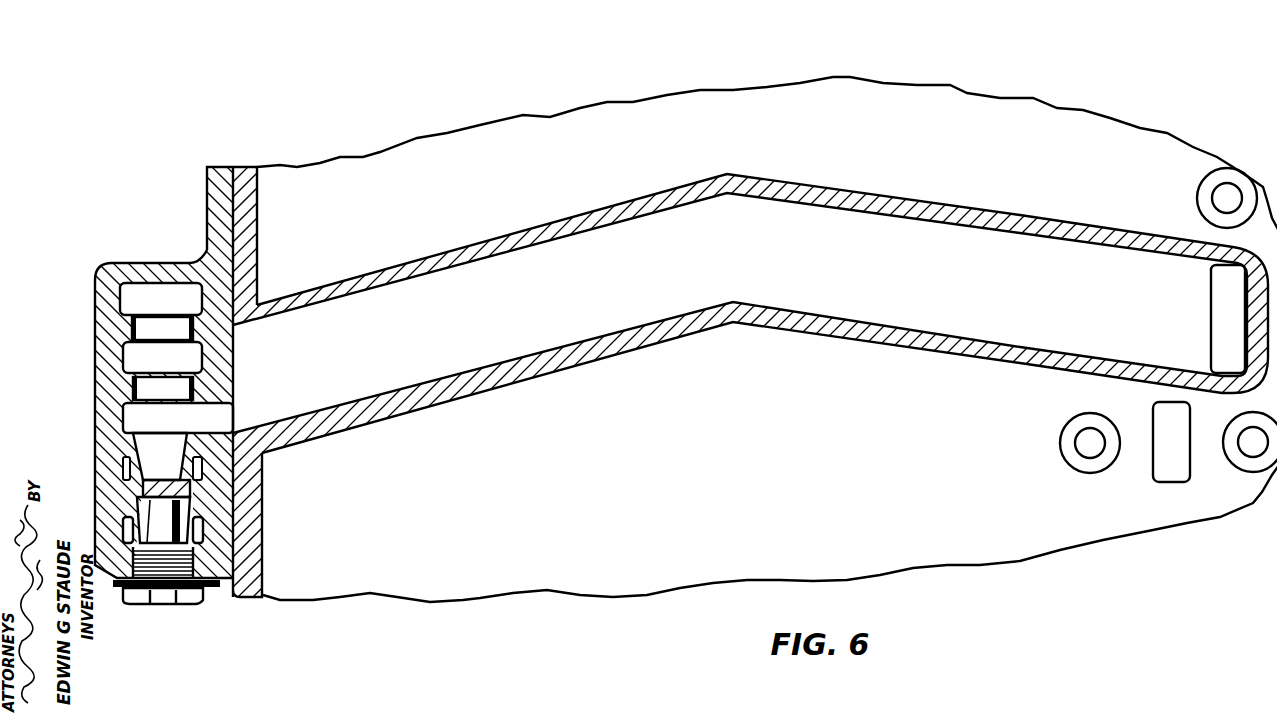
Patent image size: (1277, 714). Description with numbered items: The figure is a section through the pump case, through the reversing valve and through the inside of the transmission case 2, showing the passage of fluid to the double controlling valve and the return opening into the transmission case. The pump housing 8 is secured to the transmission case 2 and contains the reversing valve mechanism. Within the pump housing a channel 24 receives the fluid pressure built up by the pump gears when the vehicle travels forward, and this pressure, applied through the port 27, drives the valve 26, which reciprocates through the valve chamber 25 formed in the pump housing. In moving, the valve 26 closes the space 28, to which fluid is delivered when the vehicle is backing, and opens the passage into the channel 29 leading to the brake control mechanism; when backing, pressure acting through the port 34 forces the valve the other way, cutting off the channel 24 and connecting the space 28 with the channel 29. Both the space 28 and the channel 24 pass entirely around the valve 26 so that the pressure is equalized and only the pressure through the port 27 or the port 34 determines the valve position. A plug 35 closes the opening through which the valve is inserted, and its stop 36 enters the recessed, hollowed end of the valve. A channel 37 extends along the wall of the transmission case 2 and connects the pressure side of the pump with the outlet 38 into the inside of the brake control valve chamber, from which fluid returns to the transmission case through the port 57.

The transmission case 2 is at (731, 108).
The pump housing 8 is at (207, 214).
The channel 24 is at (135, 363).
The valve chamber 25 is at (140, 390).
The valve 26 is at (180, 497).
The port 27 is at (130, 303).
The space 28 is at (197, 474).
The channel 29 is at (178, 420).
The port 34 is at (198, 533).
The plug 35 is at (172, 572).
The stop 36 is at (217, 560).
The channel 37 is at (638, 357).
The outlet 38 is at (1222, 293).
The port 57 is at (1167, 470).